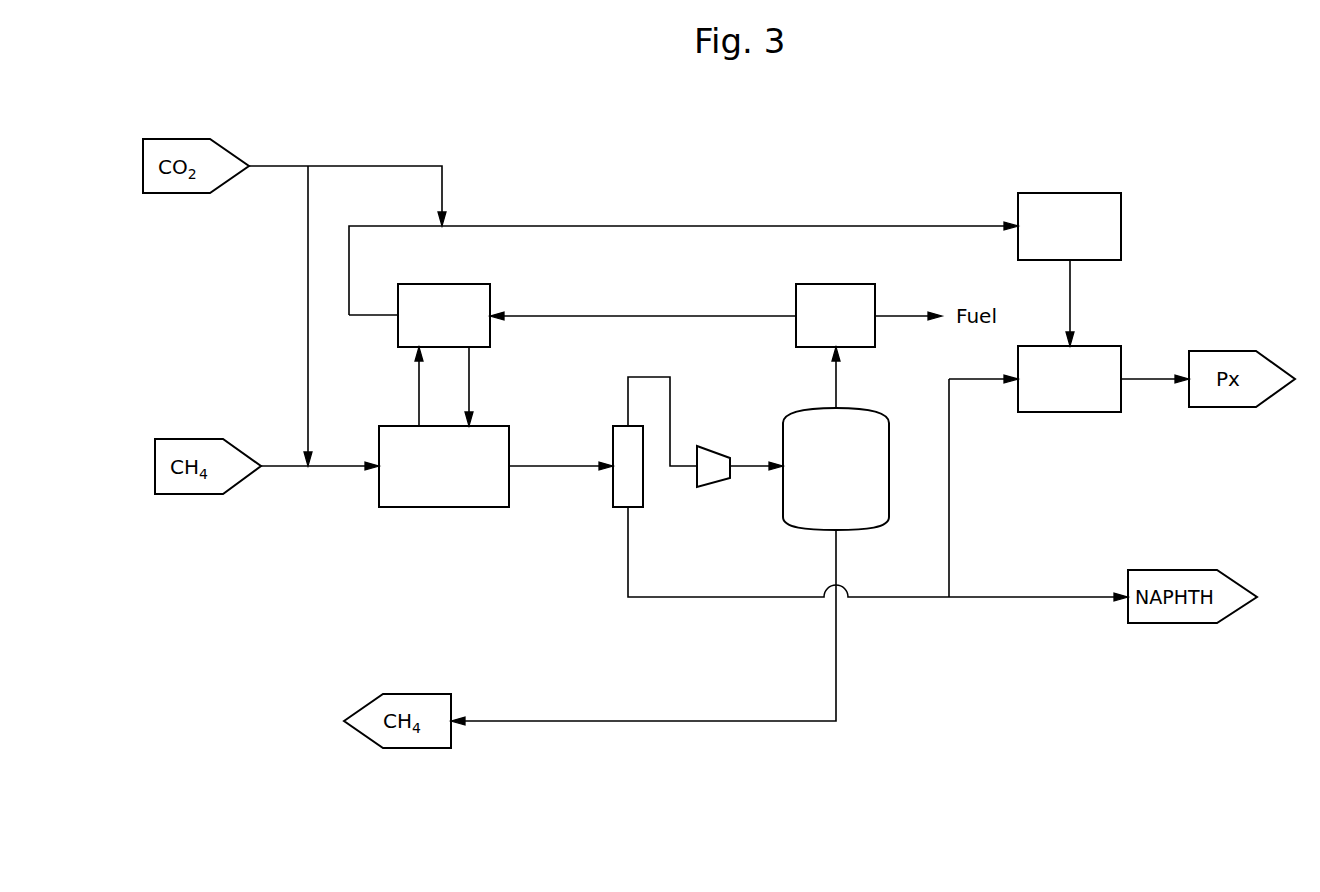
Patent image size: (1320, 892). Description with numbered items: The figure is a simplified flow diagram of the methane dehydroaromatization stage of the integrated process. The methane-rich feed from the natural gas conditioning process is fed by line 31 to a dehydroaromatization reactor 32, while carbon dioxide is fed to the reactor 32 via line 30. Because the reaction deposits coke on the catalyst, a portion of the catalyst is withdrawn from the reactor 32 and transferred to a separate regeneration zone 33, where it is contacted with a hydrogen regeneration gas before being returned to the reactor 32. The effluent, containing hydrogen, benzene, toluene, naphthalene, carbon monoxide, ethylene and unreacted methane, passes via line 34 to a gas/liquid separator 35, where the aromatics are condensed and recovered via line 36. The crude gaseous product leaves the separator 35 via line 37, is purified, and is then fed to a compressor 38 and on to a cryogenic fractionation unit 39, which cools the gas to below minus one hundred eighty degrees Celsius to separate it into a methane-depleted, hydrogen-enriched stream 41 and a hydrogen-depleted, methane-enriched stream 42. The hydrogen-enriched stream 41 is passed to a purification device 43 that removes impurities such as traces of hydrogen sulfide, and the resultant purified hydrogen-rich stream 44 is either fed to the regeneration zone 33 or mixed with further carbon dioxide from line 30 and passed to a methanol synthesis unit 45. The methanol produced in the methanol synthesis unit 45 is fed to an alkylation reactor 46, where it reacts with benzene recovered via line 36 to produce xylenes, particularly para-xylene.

The line 30 is at (280, 166).
The line 31 is at (285, 468).
The dehydroaromatization reactor 32 is at (444, 427).
The regeneration zone 33 is at (419, 315).
The line 34 is at (540, 468).
The gas/liquid separator 35 is at (613, 440).
The line 36 is at (690, 597).
The line 37 is at (670, 397).
The compressor 38 is at (715, 445).
The cryogenic fractionation unit 39 is at (836, 469).
The methane-depleted, H2-enriched stream 41 is at (836, 382).
The H2-depleted, methane-enriched stream 42 is at (622, 721).
The purification device 43 is at (869, 315).
The purified H2-rich stream 44 is at (622, 316).
The methanol synthesis unit 45 is at (1069, 269).
The alkylation reactor 46 is at (1103, 379).